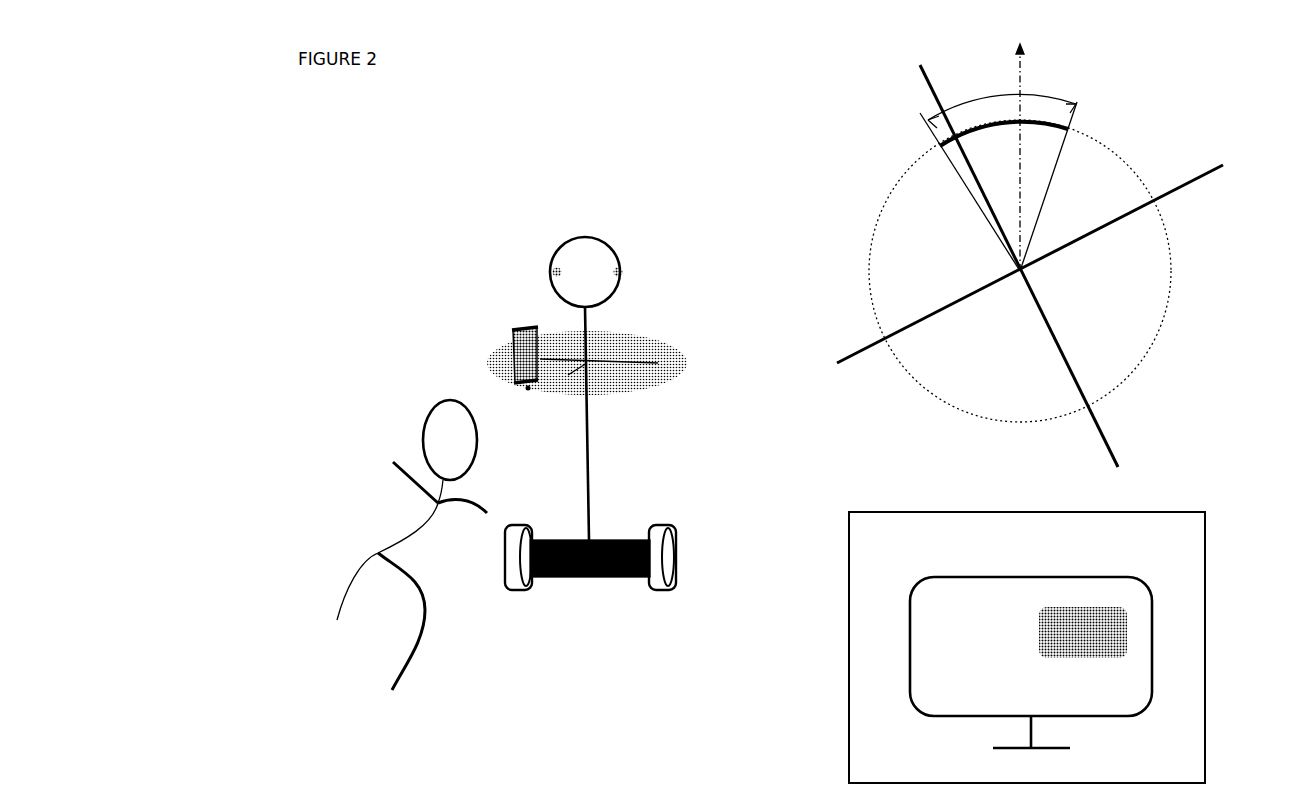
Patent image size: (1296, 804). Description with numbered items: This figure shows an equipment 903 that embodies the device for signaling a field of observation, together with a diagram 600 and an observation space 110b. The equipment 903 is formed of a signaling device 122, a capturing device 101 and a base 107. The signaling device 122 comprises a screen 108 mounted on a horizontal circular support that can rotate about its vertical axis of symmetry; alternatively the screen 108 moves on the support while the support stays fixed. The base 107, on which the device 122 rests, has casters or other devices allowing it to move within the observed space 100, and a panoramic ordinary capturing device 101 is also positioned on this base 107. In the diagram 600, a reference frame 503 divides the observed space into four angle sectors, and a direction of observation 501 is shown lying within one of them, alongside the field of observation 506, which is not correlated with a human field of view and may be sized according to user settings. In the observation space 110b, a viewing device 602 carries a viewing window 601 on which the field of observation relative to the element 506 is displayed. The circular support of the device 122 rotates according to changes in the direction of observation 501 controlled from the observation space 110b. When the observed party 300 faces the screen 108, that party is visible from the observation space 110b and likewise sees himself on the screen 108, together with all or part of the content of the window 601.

The observed space 100 is at (557, 390).
The capturing device 101 is at (614, 252).
The base 107 is at (593, 458).
The screen 108 is at (514, 330).
The signaling device 122 is at (685, 352).
The observed party 300 is at (415, 432).
The equipment 903 is at (508, 273).
The direction of observation 501 is at (1019, 79).
The reference frame 503 is at (1195, 183).
The field of observation 506 is at (962, 127).
The diagram 600 is at (1037, 250).
The viewing window 601 is at (1130, 642).
The viewing device 602 is at (1074, 575).
The observation space 110b is at (1027, 647).